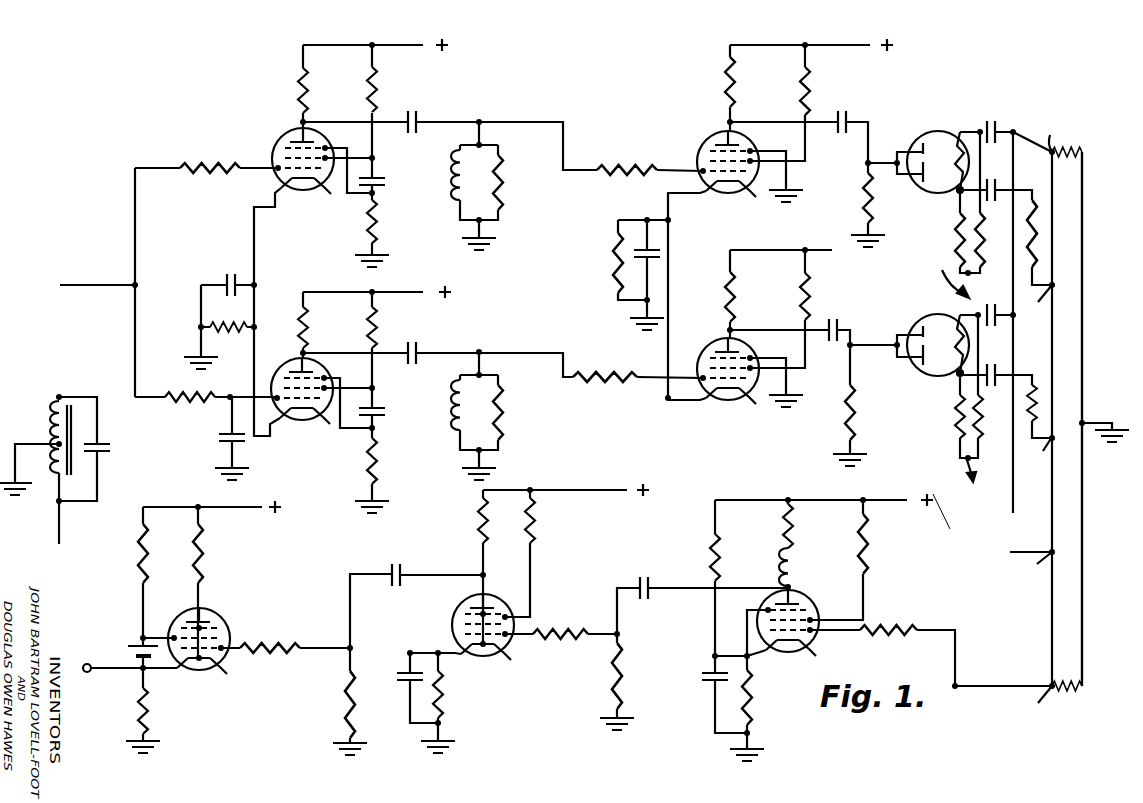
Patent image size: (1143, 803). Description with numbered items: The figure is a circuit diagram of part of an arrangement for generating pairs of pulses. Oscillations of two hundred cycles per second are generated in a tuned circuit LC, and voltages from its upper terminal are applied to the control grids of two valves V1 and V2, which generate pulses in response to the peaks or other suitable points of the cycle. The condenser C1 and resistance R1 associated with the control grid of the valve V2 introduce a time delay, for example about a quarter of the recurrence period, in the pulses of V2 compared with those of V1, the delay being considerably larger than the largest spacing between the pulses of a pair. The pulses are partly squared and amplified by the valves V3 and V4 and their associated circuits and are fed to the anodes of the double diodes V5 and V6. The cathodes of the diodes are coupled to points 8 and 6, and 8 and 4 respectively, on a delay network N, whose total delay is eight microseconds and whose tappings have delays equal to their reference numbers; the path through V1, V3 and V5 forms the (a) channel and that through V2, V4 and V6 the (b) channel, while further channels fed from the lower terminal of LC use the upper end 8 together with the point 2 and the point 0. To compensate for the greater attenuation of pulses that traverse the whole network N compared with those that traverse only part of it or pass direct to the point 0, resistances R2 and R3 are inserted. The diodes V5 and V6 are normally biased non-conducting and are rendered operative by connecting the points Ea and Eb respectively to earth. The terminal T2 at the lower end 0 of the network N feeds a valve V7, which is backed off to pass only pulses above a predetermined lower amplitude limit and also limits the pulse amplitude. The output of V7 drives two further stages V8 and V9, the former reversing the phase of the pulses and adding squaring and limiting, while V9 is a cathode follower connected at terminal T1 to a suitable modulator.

The valve V1 is at (287, 132).
The valve V2 is at (285, 358).
The valve V3 is at (710, 132).
The valve V4 is at (731, 401).
The double diode V5 is at (937, 128).
The double diode V6 is at (918, 317).
The valve V7 is at (800, 593).
The valve V8 is at (458, 598).
The valve V9 is at (217, 614).
The resistance R1 is at (183, 385).
The resistance R2 is at (1037, 230).
The resistance R3 is at (1038, 398).
The condenser C1 is at (220, 448).
The tuned circuit LC is at (98, 475).
The terminal T1 is at (94, 684).
The terminal T2 is at (960, 681).
The point Ea is at (940, 276).
The point Eb is at (978, 487).
The delay network N is at (1073, 486).
The point 0 is at (1051, 702).
The point 2 is at (1032, 564).
The point 4 is at (1040, 459).
The point 6 is at (1039, 303).
The point 8 is at (1065, 133).